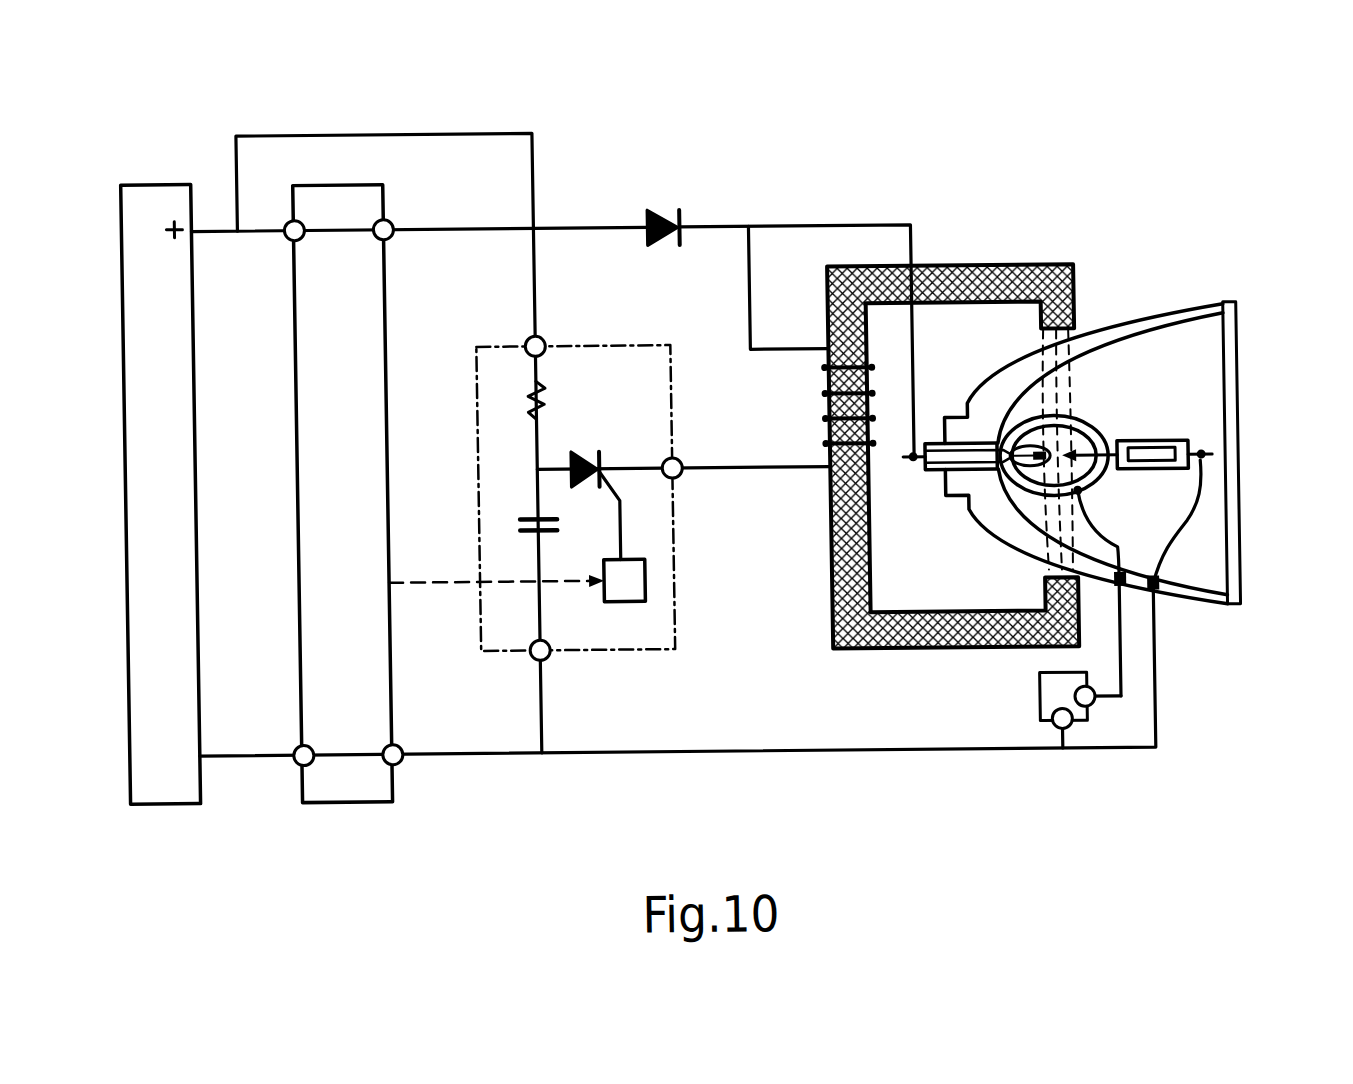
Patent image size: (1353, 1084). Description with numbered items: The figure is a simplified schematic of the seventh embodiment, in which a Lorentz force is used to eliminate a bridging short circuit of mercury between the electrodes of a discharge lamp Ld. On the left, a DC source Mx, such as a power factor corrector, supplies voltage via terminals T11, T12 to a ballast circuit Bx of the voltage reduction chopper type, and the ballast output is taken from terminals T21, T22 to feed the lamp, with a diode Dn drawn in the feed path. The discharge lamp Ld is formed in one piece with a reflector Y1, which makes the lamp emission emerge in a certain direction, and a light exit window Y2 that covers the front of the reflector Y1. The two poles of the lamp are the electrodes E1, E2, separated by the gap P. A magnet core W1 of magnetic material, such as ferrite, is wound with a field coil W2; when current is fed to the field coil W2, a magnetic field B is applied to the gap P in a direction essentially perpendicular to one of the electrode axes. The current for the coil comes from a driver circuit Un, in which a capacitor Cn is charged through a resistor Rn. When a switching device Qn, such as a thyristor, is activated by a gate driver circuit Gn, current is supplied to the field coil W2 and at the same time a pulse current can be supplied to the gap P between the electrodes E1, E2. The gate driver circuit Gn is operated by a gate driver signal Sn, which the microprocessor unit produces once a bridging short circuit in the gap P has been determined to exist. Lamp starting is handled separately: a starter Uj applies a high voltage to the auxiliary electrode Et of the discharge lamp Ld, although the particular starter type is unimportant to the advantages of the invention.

The DC source Mx is at (149, 800).
The ballast circuit Bx is at (344, 802).
The terminal T11 is at (297, 237).
The terminal T12 is at (296, 741).
The terminal T21 is at (388, 237).
The terminal T22 is at (388, 741).
The diode Dn is at (658, 210).
The driver circuit Un is at (674, 625).
The resistor Rn is at (541, 392).
The capacitor Cn is at (527, 513).
The switching device Qn is at (585, 452).
The gate driver circuit Gn is at (633, 559).
The gate driver signal Sn is at (445, 578).
The magnet core W1 is at (829, 557).
The field coil W2 is at (831, 443).
The reflector Y1 is at (1169, 305).
The light exit window Y2 is at (1239, 509).
The auxiliary electrode Et is at (1045, 495).
The magnetic field B is at (1076, 416).
The gap P is at (1094, 421).
The electrode E1 is at (1077, 494).
The electrode E2 is at (971, 500).
The discharge lamp Ld is at (1158, 445).
The starter Uj is at (1036, 703).